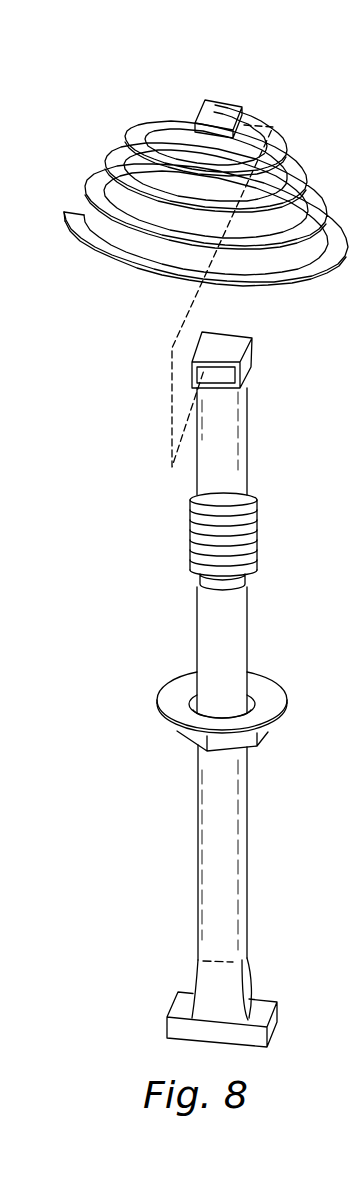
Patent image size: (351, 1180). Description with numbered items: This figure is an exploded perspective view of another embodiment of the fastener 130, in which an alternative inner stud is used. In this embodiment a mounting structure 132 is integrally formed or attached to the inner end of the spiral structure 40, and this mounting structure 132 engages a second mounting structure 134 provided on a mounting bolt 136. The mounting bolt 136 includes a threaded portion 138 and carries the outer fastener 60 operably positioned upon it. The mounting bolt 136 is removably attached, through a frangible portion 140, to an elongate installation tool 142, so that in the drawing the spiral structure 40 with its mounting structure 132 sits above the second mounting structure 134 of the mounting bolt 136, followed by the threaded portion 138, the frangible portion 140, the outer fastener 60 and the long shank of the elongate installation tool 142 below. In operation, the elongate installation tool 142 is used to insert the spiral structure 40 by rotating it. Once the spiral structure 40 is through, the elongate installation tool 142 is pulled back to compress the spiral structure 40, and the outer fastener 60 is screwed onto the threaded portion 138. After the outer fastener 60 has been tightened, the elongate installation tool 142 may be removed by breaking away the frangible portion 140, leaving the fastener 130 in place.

The fastener 130 is at (111, 92).
The mounting structure 132 is at (228, 111).
The spiral structure 40 is at (121, 157).
The second mounting structure 134 is at (197, 367).
The mounting bolt 136 is at (201, 466).
The threaded portion 138 is at (189, 542).
The frangible portion 140 is at (243, 571).
The outer fastener 60 is at (273, 694).
The elongate installation tool 142 is at (242, 845).